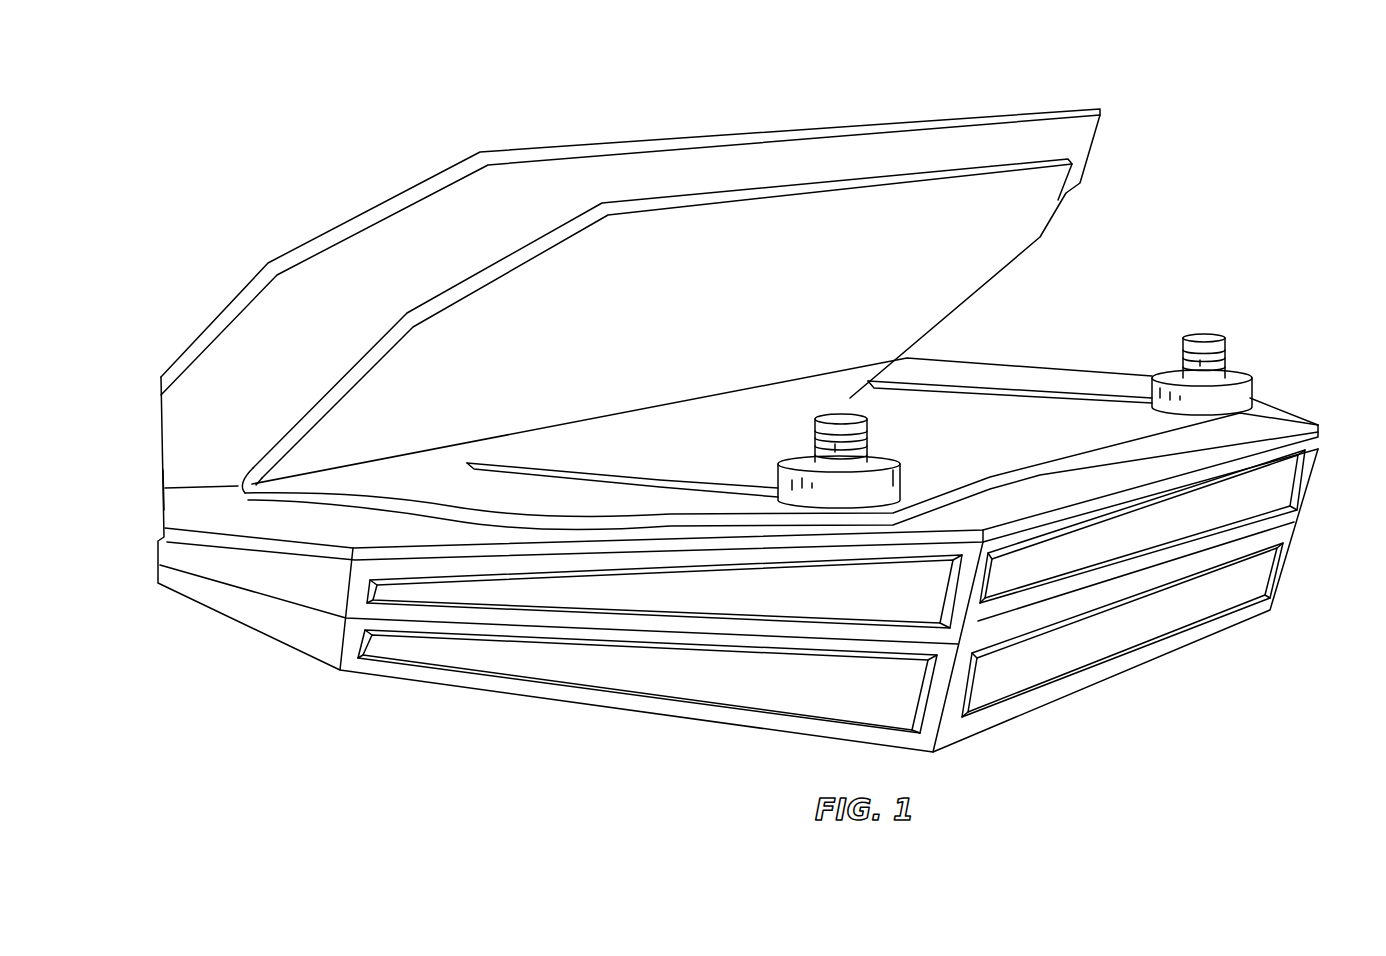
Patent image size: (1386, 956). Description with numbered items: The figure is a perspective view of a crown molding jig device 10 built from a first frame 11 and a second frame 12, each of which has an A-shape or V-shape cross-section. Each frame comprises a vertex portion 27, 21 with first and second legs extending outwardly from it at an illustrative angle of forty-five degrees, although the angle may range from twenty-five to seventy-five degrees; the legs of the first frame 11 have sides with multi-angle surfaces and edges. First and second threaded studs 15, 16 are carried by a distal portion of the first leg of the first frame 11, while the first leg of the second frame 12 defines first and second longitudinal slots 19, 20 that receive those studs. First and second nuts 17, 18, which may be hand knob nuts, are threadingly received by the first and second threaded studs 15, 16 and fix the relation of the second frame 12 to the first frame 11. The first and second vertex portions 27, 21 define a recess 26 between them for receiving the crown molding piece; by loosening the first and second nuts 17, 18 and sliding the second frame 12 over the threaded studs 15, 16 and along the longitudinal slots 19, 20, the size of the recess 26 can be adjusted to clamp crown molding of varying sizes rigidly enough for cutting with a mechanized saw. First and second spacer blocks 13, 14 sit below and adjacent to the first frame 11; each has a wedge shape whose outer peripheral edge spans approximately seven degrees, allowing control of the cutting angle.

The crown molding jig device 10 is at (1203, 134).
The first frame 11 is at (750, 131).
The second frame 12 is at (933, 169).
The first spacer block 13 is at (1310, 481).
The second spacer block 14 is at (1283, 567).
The first threaded stud 15 is at (845, 433).
The second threaded stud 16 is at (1205, 348).
The first nut 17 is at (837, 493).
The second nut 18 is at (1252, 389).
The first longitudinal slot 19 is at (548, 470).
The second longitudinal slot 20 is at (1092, 398).
The vertex portion 21 is at (556, 428).
The recess 26 is at (320, 382).
The vertex portion 27 is at (192, 486).